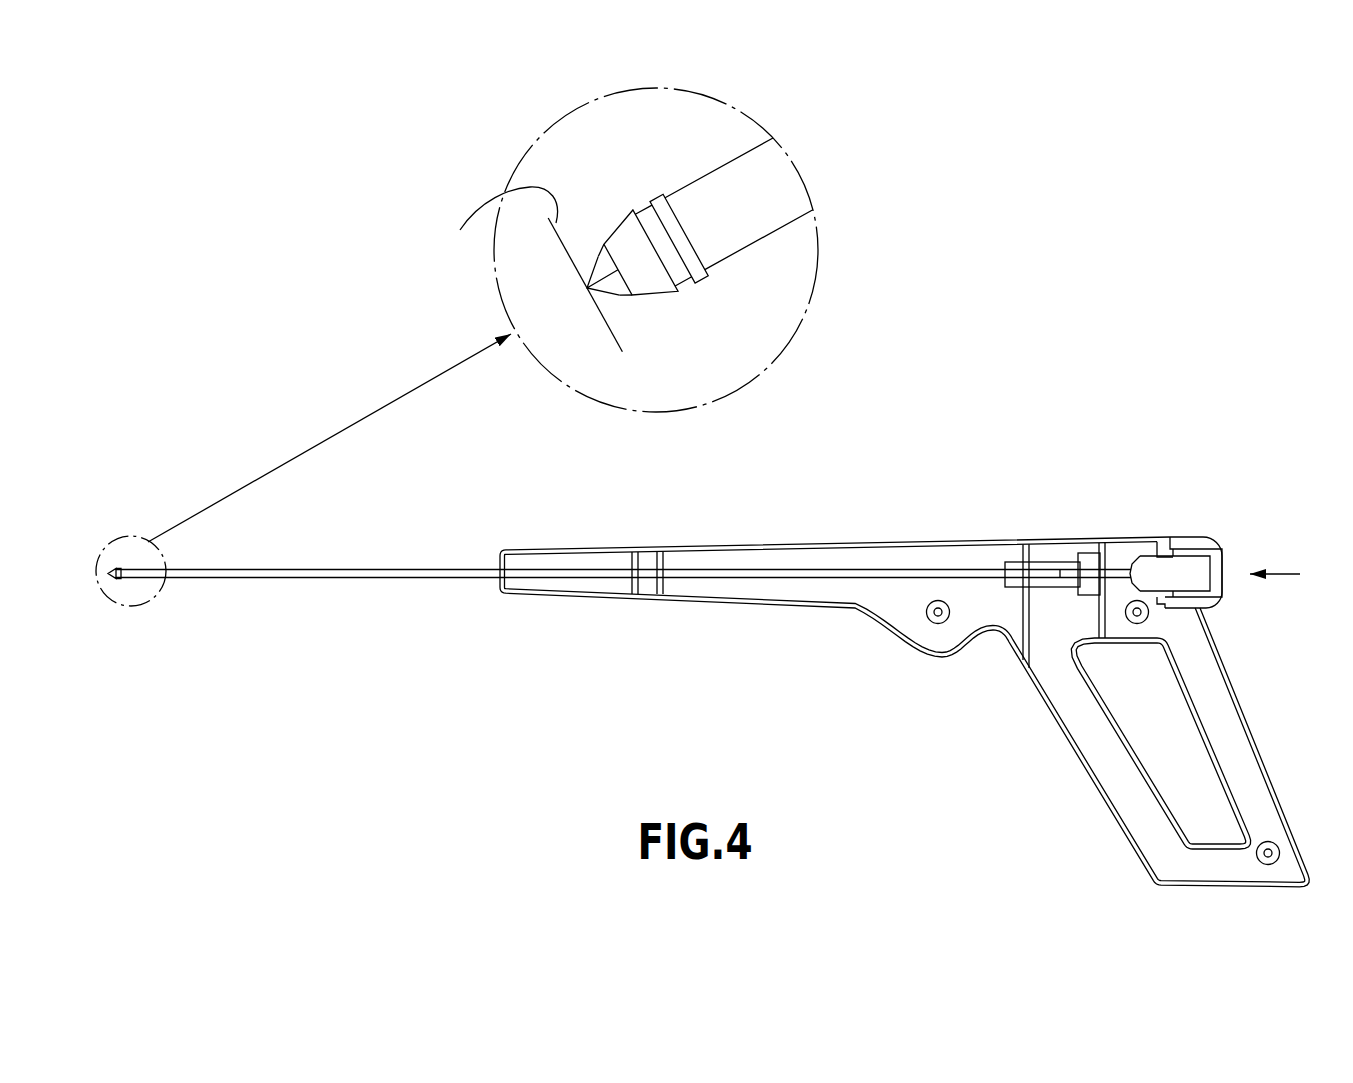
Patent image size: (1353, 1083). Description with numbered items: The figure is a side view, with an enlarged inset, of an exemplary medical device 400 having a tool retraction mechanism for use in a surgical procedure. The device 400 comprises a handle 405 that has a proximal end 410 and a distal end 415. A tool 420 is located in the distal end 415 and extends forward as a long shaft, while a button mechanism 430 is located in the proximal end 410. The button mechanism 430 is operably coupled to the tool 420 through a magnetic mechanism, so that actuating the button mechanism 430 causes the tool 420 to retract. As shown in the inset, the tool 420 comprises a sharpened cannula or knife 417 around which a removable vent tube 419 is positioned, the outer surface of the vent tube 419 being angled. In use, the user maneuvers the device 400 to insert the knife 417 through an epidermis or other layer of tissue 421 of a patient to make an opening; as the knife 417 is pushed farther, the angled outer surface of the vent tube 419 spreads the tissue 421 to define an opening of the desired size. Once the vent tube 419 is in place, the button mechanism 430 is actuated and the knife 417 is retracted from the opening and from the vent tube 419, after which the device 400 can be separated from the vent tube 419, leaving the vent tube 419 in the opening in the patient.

The device 400 is at (1146, 496).
The handle 405 is at (1055, 722).
The proximal end 410 is at (1218, 535).
The distal end 415 is at (506, 541).
The knife 417 is at (600, 296).
The vent tube 419 is at (605, 243).
The tool 420 is at (328, 578).
The tissue 421 is at (523, 269).
The button mechanism 430 is at (1065, 563).